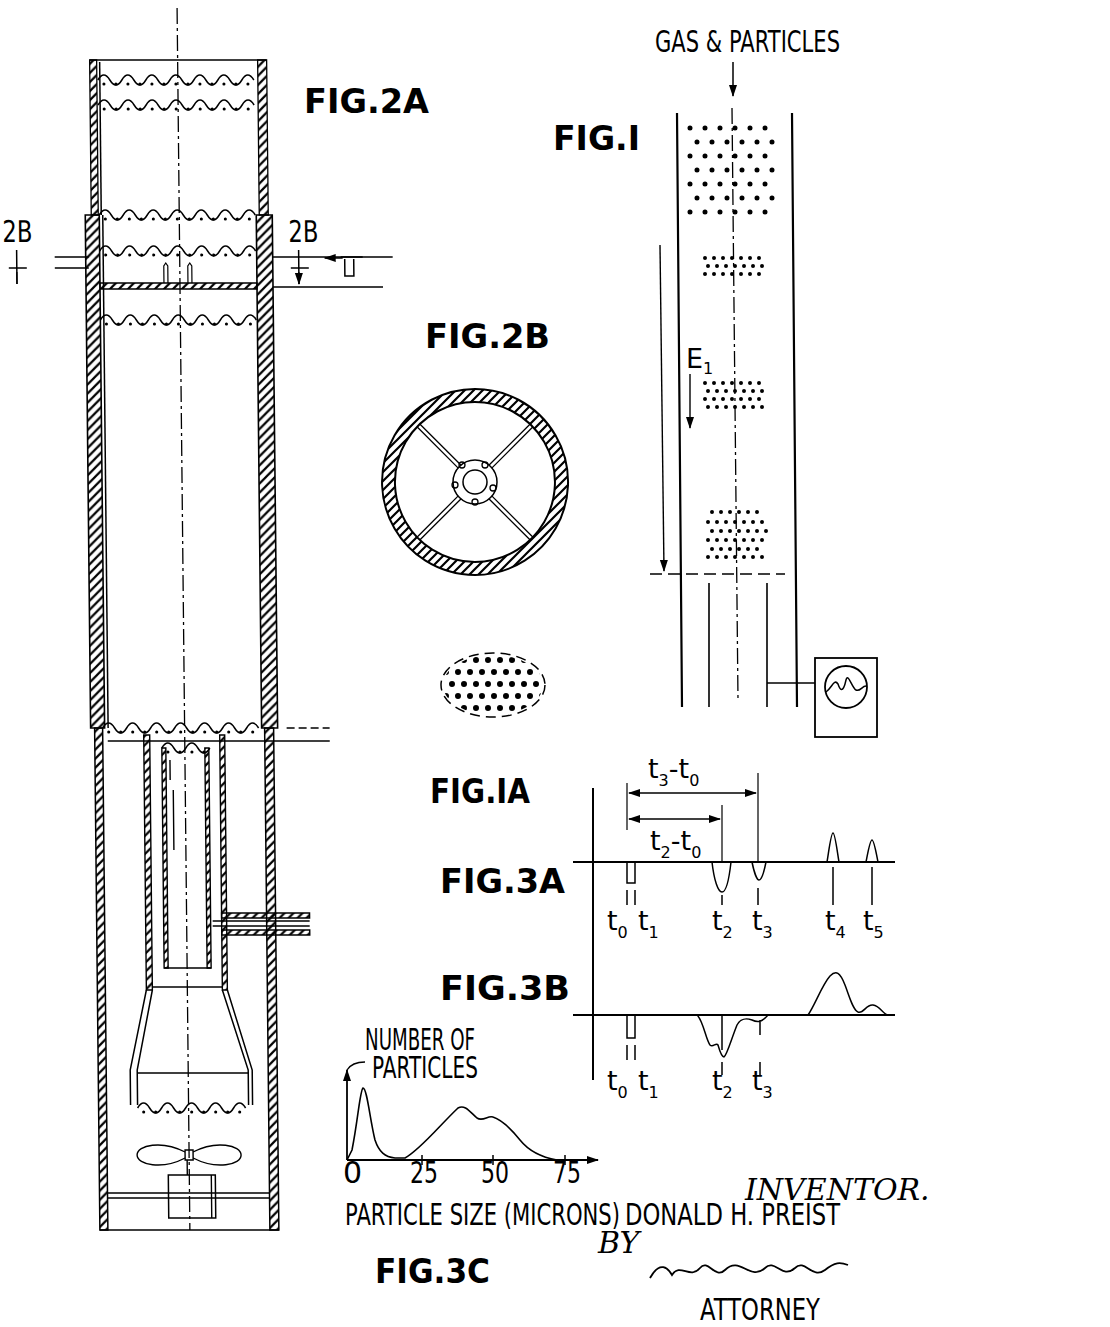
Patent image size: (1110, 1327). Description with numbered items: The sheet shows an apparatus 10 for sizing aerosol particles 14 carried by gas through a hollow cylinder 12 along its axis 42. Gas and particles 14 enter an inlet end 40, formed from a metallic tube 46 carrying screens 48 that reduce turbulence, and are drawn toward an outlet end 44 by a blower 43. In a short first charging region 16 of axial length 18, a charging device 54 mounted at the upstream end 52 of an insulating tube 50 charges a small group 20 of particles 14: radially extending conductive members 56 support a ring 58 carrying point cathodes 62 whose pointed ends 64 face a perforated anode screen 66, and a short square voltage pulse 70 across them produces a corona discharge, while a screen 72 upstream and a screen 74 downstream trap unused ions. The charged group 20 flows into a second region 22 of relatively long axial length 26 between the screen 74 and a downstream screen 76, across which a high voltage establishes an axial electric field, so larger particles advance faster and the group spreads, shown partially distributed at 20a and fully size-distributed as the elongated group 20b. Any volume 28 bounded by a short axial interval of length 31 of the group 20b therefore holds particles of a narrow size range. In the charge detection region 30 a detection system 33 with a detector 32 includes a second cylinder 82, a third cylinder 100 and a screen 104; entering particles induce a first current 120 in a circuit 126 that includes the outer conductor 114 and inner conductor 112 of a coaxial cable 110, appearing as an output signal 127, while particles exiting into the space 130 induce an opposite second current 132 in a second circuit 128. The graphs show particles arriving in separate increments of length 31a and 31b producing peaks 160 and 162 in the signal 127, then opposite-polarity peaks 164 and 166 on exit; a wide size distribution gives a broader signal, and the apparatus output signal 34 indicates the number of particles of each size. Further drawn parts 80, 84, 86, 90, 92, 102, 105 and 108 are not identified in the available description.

In FIG. 2A, the apparatus 10 is at (290, 364).
In FIG. 1, the apparatus 10 is at (827, 362).
In FIG. 2A, the hollow cylinder 12 is at (276, 520).
In FIG. 1, the hollow cylinder 12 is at (797, 297).
In FIG. 1, the aerosol particles 14 is at (764, 162).
In FIG. 1A, the aerosol particles 14 is at (487, 712).
In FIG. 1, the first charging region 16 is at (766, 235).
In FIG. 2A, the axial length of first region 18 is at (69, 292).
In FIG. 1, the axial length of first region 18 is at (672, 242).
In FIG. 1, the group of particles 20 is at (774, 265).
In FIG. 1, the partially distributed group 20a is at (777, 395).
In FIG. 1, the axially elongated group 20b is at (777, 506).
In FIG. 1, the second region 22 is at (770, 450).
In FIG. 1, the axial length of second region 26 is at (662, 358).
In FIG. 1A, the volume 28 is at (500, 651).
In FIG. 2A, the charge detection region 30 is at (157, 739).
In FIG. 1, the charge detection region 30 is at (775, 580).
In FIG. 1, the axial interval length 31 is at (778, 543).
In FIG. 1A, the axial interval length 31 is at (567, 660).
In FIG. 3A, the first increment of length 31a is at (724, 860).
In FIG. 3A, the second increment of length 31b is at (762, 860).
In FIG. 2A, the detector 32 is at (134, 832).
In FIG. 1, the detector 32 is at (706, 657).
In FIG. 2A, the detection system 33 is at (238, 885).
In FIG. 1, the detection system 33 is at (861, 655).
In FIG. 1, the output signal 34 is at (838, 672).
In FIG. 3C, the output signal 34 is at (477, 1117).
In FIG. 2A, the inlet end 40 is at (263, 62).
In FIG. 2A, the axis 42 is at (180, 30).
In FIG. 1, the axis 42 is at (737, 333).
In FIG. 2A, the blower 43 is at (163, 1182).
In FIG. 2A, the outlet end 44 is at (88, 1075).
In FIG. 2A, the metallic tube 46 is at (90, 145).
In FIG. 2A, the screens 48 is at (153, 80).
In FIG. 2A, the insulating tube 50 is at (262, 553).
In FIG. 2B, the insulating tube 50 is at (450, 570).
In FIG. 2A, the upstream end of tube 52 is at (269, 220).
In FIG. 2A, the charging device 54 is at (145, 263).
In FIG. 2A, the conductive members 56 is at (255, 288).
In FIG. 2B, the conductive members 56 is at (512, 518).
In FIG. 2A, the ring 58 is at (178, 292).
In FIG. 2B, the ring 58 is at (475, 459).
In FIG. 2A, the point cathodes 62 is at (197, 270).
In FIG. 2B, the point cathodes 62 is at (495, 491).
In FIG. 2A, the pointed ends 64 is at (188, 265).
In FIG. 2A, the anode screen 66 is at (152, 248).
In FIG. 2A, the voltage pulse 70 is at (365, 257).
In FIG. 2A, the upstream screen 72 is at (205, 214).
In FIG. 2A, the downstream screen 74 is at (222, 322).
In FIG. 2A, the field screen 76 is at (225, 727).
In FIG. 1, the field screen 76 is at (700, 574).
In FIG. 2A, the housing wall 80 is at (88, 773).
In FIG. 2A, the second cylinder 82 is at (138, 893).
In FIG. 2A, the screen 84 is at (145, 727).
In FIG. 2A, the screen 86 is at (135, 1112).
In FIG. 2A, the flared skirt 90 is at (128, 992).
In FIG. 2A, the skirt wall 92 is at (243, 1050).
In FIG. 2A, the third cylinder 100 is at (206, 832).
In FIG. 2A, the tube top 102 is at (203, 765).
In FIG. 2A, the screen 104 is at (182, 745).
In FIG. 2A, the spacing 105 is at (305, 715).
In FIG. 2A, the skirt bottom 108 is at (241, 1082).
In FIG. 2A, the coaxial cable 110 is at (290, 912).
In FIG. 2A, the inner conductor 112 is at (300, 922).
In FIG. 2A, the outer conductor 114 is at (292, 934).
In FIG. 3B, the first current 120 is at (705, 1050).
In FIG. 2A, the first circuit 126 is at (222, 862).
In FIG. 3A, the output signal 127 is at (703, 903).
In FIG. 3B, the output signal 127 is at (750, 1042).
In FIG. 2A, the second circuit 128 is at (224, 980).
In FIG. 2A, the space 130 is at (165, 982).
In FIG. 3B, the second current 132 is at (815, 990).
In FIG. 3A, the first peak 160 is at (728, 893).
In FIG. 3A, the second peak 162 is at (766, 882).
In FIG. 3A, the first opposite-polarity peak 164 is at (832, 836).
In FIG. 3A, the second opposite-polarity peak 166 is at (871, 841).